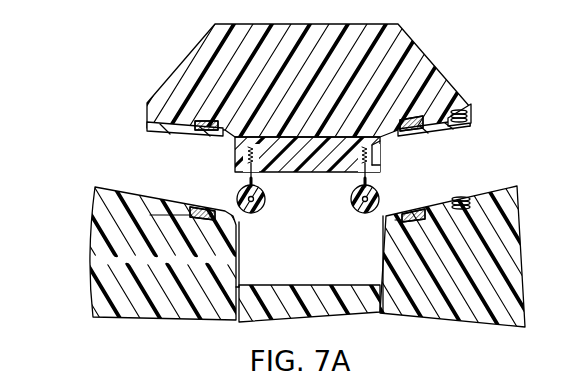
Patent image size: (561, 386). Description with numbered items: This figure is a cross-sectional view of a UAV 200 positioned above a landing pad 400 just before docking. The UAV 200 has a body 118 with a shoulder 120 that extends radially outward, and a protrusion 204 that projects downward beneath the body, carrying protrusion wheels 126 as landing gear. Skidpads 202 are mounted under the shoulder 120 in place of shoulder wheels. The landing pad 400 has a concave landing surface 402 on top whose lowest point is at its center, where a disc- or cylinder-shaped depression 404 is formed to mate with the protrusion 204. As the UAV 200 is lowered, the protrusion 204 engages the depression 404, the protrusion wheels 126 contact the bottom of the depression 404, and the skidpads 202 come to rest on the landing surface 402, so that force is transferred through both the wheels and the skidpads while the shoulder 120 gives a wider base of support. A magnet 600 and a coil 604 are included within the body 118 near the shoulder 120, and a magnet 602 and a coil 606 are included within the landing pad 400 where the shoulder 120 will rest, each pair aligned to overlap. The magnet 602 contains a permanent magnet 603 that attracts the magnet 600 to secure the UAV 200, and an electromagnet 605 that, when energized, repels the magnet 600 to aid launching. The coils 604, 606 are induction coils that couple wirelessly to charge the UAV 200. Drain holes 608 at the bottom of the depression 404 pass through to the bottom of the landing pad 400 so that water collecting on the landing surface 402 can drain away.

The body 118 is at (205, 50).
The shoulder 120 is at (471, 118).
The protrusion wheels 126 is at (262, 212).
The UAV 200 is at (480, 62).
The skidpads 202 is at (150, 127).
The protrusion 204 is at (383, 162).
The landing pad 400 is at (72, 292).
The landing surface 402 is at (187, 191).
The depression 404 is at (237, 236).
The magnet 600 is at (207, 121).
The magnet 602 is at (195, 212).
The permanent magnet 603 is at (192, 210).
The coil 604 is at (465, 210).
The electromagnet 605 is at (413, 207).
The coil 606 is at (466, 111).
The drain holes 608 is at (381, 313).